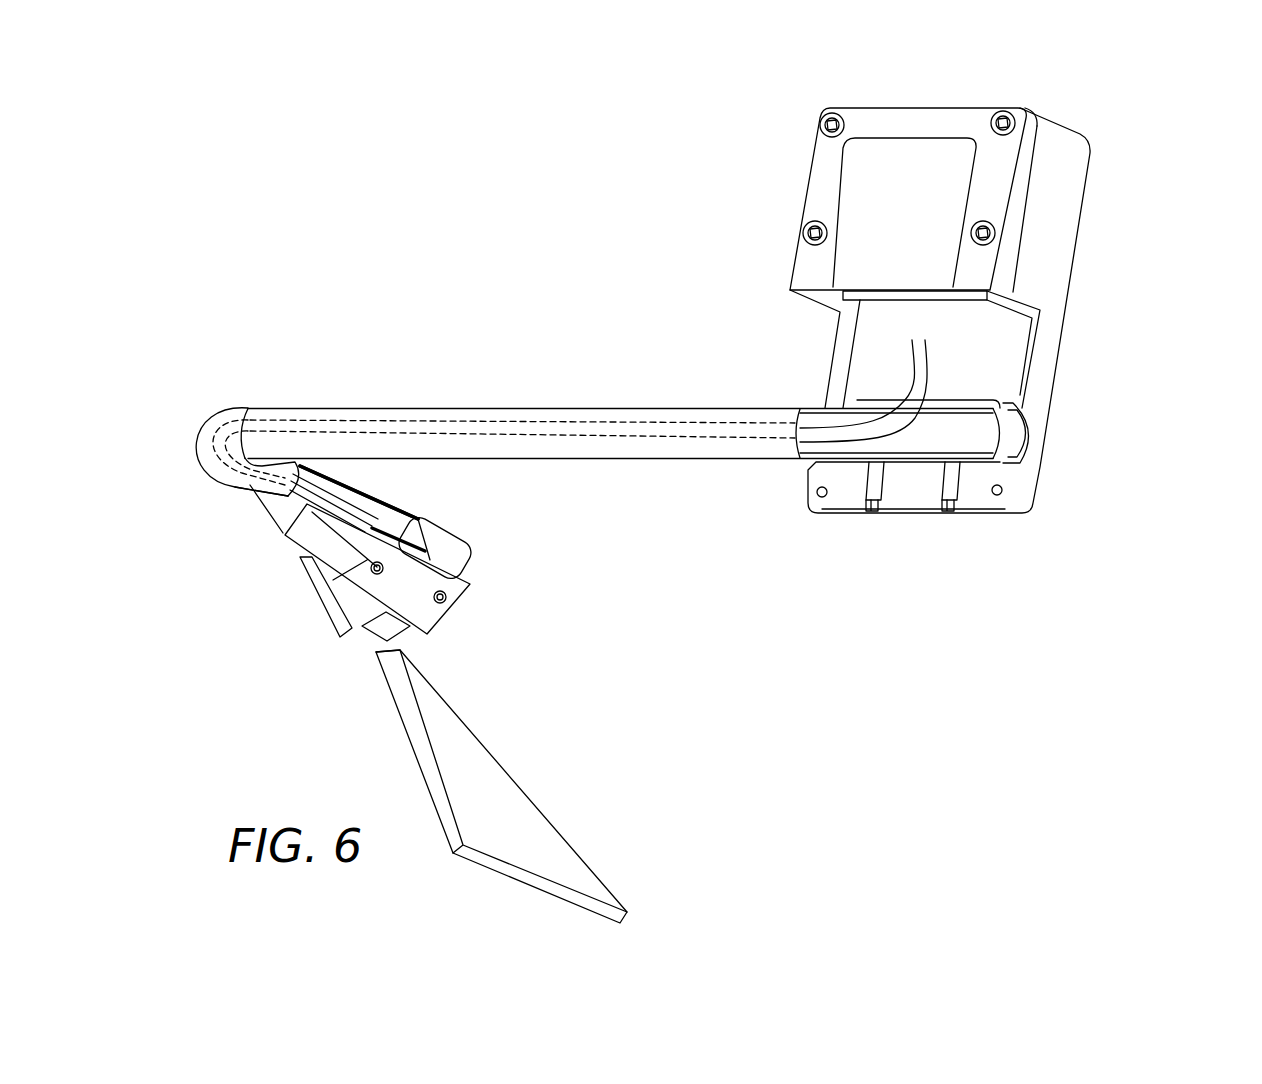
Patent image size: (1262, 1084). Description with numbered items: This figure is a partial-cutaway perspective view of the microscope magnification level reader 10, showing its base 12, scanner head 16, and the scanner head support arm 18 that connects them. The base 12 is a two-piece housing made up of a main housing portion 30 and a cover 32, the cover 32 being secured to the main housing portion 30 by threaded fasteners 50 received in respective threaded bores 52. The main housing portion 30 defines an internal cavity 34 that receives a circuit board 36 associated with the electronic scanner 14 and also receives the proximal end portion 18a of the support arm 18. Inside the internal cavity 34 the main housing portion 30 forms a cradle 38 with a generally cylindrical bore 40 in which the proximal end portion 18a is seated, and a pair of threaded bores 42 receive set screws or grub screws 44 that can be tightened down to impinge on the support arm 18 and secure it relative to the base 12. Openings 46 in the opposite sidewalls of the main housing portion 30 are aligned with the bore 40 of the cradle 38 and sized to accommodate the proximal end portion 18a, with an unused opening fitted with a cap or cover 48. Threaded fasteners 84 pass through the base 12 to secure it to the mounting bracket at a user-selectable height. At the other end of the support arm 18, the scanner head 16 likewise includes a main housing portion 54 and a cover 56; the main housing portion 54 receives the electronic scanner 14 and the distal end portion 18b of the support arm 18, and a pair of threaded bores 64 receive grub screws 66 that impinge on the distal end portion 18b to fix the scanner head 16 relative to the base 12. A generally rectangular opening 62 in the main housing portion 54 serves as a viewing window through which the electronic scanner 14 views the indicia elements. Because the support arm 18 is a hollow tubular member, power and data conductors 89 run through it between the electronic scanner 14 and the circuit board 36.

The microscope magnification level reader 10 is at (504, 185).
The base 12 is at (1156, 148).
The electronic scanner 14 is at (355, 640).
The scanner head 16 is at (472, 590).
The scanner head support arm 18 is at (505, 408).
The proximal end portion of support arm 18a is at (817, 468).
The distal end portion of support arm 18b is at (401, 499).
The main housing portion 30 is at (1052, 258).
The cover 32 is at (822, 184).
The internal cavity 34 is at (820, 332).
The circuit board 36 is at (932, 303).
The cradle 38 is at (950, 398).
The cylindrical bore 40 is at (1003, 406).
The threaded bores 42 is at (866, 470).
The set screws or grub screws 44 is at (870, 512).
The openings 46 is at (1037, 437).
The cap or cover 48 is at (455, 558).
The threaded fasteners 50 is at (820, 122).
The threaded bores 52 is at (820, 497).
The main housing portion 54 is at (277, 508).
The cover 56 is at (313, 583).
The rectangular opening 62 is at (412, 631).
The threaded bores 64 is at (357, 518).
The set screws or grub screws 66 is at (380, 562).
The threaded fasteners 84 is at (806, 232).
The power and data conductors 89 is at (408, 417).